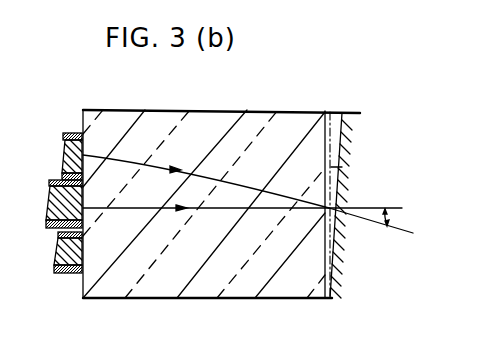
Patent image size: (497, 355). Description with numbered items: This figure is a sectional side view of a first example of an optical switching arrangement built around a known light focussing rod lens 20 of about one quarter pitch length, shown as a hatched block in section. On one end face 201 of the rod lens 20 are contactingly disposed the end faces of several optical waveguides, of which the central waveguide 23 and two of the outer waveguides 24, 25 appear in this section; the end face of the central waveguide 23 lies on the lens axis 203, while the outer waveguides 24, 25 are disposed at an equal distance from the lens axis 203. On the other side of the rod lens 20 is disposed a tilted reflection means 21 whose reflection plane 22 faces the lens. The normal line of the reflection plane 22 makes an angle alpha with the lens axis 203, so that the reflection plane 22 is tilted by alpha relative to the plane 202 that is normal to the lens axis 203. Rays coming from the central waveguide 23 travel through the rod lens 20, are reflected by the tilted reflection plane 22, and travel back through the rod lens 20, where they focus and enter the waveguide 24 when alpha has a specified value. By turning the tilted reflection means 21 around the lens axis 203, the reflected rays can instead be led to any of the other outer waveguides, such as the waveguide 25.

The light focussing rod lens 20 is at (168, 121).
The end face of the rod lens 201 is at (83, 284).
The plane normal to the lens axis 202 is at (335, 113).
The lens axis 203 is at (258, 211).
The tilted reflection means 21 is at (351, 128).
The reflection plane 22 is at (342, 149).
The central optical waveguide 23 is at (52, 202).
The optical waveguide 24 is at (66, 139).
The optical waveguide 25 is at (63, 258).